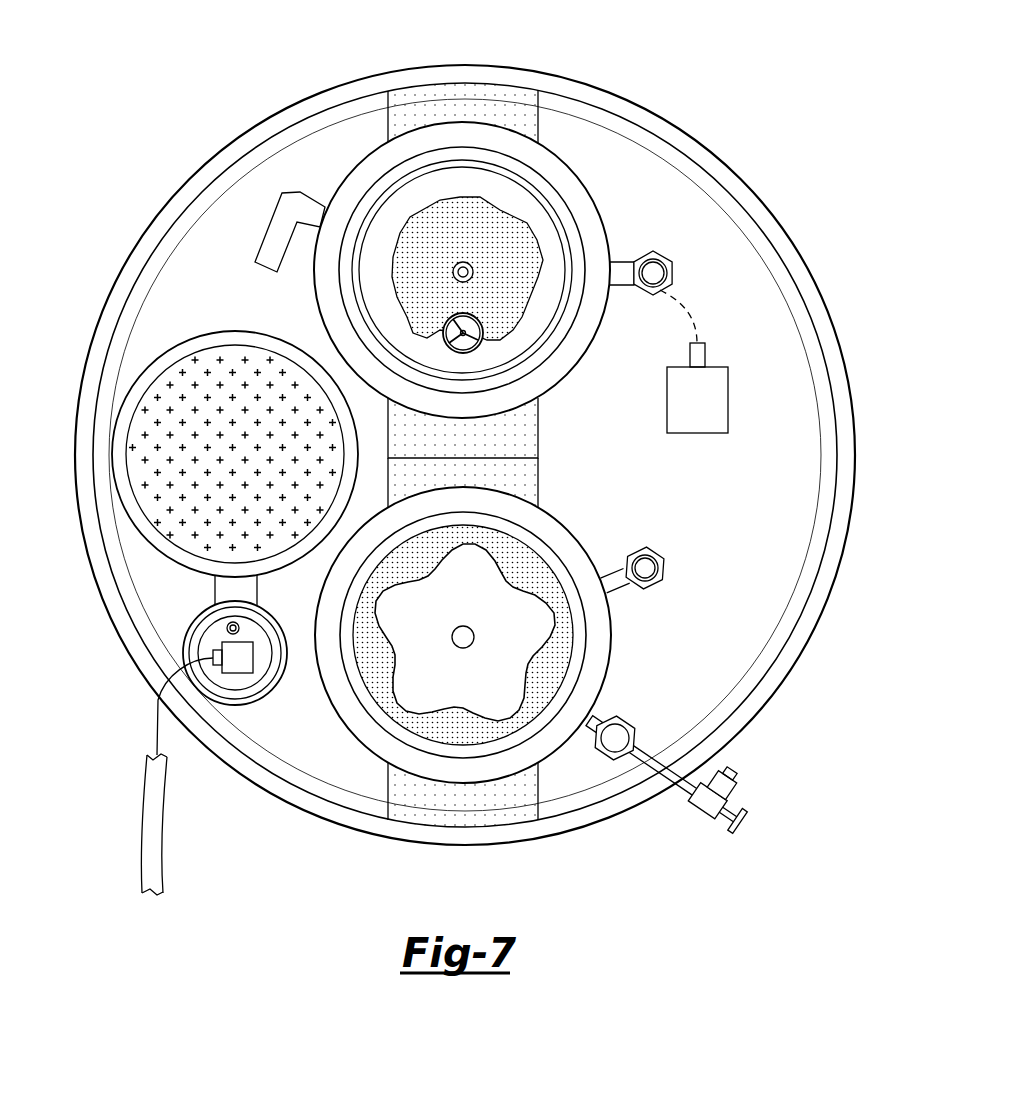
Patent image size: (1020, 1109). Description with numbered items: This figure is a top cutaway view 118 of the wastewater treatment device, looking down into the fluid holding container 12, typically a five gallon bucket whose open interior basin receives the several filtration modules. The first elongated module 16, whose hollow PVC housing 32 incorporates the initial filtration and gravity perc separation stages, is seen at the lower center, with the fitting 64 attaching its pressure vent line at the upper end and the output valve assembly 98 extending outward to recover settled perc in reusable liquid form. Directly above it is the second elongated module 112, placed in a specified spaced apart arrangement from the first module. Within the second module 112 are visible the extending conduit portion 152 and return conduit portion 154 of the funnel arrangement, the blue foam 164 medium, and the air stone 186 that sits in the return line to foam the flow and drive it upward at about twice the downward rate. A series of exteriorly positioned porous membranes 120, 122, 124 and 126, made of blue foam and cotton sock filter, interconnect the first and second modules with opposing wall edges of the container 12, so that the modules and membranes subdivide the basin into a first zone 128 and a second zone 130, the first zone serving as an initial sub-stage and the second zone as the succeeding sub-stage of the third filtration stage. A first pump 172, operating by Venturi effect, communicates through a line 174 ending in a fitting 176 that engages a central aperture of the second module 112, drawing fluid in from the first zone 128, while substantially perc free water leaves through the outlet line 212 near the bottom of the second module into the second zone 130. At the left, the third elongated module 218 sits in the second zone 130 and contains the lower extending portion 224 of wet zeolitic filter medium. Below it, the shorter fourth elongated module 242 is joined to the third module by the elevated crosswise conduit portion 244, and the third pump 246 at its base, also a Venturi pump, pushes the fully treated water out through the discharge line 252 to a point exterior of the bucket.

The fluid holding container 12 is at (693, 143).
The first elongated module 16 is at (612, 663).
The elongated housing 32 is at (613, 617).
The fitting 64 is at (625, 552).
The output valve assembly 98 is at (677, 814).
The second elongated module 112 is at (465, 237).
The top cutaway view 118 is at (153, 194).
The porous membrane 120 is at (417, 812).
The porous membrane 122 is at (537, 487).
The porous membrane 124 is at (537, 437).
The porous membrane 126 is at (505, 102).
The first zone 128 is at (746, 501).
The second zone 130 is at (233, 290).
The extending conduit portion 152 is at (457, 262).
The return conduit portion 154 is at (477, 355).
The foam 164 is at (392, 267).
The first pump 172 is at (728, 393).
The line 174 is at (690, 355).
The fitting 176 is at (672, 270).
The air diffuser/air stone 186 is at (443, 328).
The line 212 is at (287, 207).
The third elongated module 218 is at (190, 437).
The lower extending portion of wet zeolitic 224 is at (143, 428).
The fourth elongated module 242 is at (278, 633).
The conduit portion 244 is at (227, 594).
The third pump 246 is at (242, 670).
The discharge line 252 is at (143, 810).